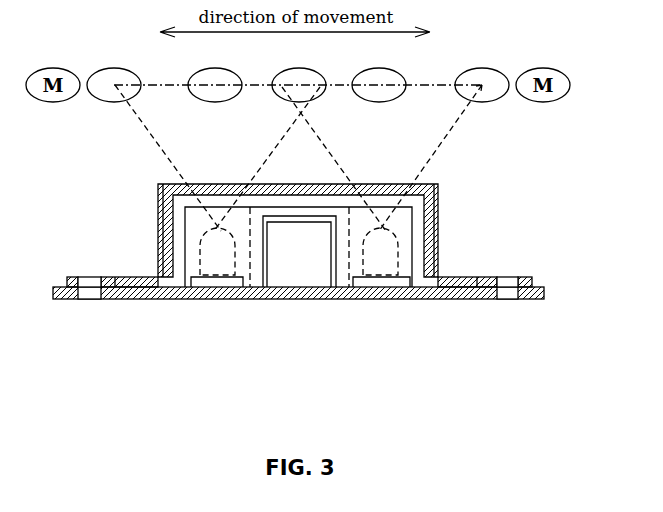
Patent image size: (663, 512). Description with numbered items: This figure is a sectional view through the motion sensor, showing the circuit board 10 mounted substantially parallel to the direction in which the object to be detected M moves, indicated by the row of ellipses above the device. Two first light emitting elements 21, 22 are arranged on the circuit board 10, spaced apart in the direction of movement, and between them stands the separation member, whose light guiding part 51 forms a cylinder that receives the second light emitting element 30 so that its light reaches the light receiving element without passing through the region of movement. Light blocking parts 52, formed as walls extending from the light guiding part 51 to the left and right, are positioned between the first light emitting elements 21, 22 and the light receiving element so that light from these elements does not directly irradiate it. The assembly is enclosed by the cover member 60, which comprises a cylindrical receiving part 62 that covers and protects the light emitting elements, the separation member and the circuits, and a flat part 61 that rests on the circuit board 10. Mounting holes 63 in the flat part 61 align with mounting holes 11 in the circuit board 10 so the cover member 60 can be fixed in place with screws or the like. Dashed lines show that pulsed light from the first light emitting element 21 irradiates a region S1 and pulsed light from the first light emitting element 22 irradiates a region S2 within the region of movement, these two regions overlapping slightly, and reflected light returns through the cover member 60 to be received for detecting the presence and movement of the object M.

The circuit board 10 is at (128, 299).
The mounting holes 11 is at (88, 295).
The first light emitting element 21 is at (217, 282).
The first light emitting element 22 is at (383, 282).
The second light emitting element 30 is at (297, 270).
The light guiding part 51 is at (296, 210).
The light blocking parts 52 is at (162, 197).
The cover member 60 is at (312, 206).
The flat part 61 is at (140, 278).
The cylindrical receiving part 62 is at (432, 242).
The mounting holes 63 is at (83, 280).
The irradiation region S1 is at (217, 158).
The irradiation region S2 is at (382, 158).